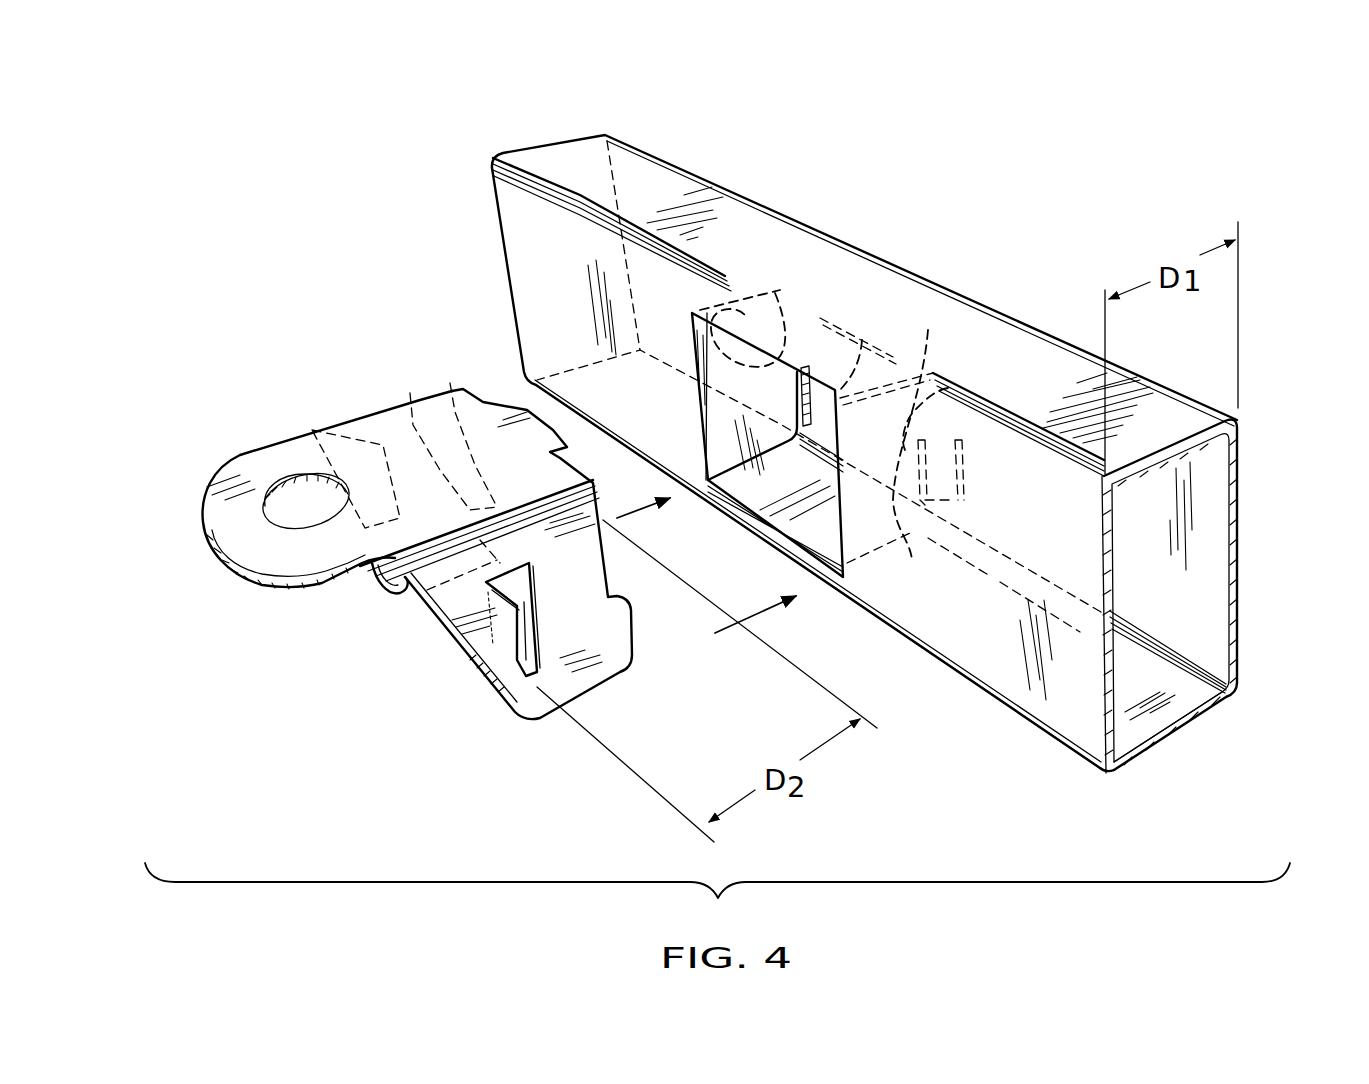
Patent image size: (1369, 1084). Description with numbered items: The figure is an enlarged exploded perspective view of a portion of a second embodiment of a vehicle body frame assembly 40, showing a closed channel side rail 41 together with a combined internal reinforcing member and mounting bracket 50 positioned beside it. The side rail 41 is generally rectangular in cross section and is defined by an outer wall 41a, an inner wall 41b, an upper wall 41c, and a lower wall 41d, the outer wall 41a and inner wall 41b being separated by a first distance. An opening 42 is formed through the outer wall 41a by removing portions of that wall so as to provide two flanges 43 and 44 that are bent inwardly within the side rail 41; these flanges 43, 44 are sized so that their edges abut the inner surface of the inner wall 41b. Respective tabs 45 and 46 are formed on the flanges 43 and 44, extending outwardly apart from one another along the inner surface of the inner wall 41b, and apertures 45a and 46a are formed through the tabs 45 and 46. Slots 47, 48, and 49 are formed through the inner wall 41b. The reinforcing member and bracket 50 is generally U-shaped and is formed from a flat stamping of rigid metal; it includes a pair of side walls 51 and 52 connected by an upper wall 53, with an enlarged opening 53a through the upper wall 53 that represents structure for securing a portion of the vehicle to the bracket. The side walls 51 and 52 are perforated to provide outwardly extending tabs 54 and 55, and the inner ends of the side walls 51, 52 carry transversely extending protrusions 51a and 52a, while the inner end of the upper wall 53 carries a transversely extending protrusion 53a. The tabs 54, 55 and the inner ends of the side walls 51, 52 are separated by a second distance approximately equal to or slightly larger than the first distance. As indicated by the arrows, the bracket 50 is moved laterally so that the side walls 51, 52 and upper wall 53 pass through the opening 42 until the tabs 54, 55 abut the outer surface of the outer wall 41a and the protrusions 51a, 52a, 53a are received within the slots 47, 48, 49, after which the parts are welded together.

The vehicle body frame assembly 40 is at (982, 146).
The side rail 41 is at (1240, 418).
The outer wall 41a is at (1075, 712).
The inner wall 41b is at (1237, 515).
The upper wall 41c is at (568, 160).
The lower wall 41d is at (1152, 722).
The opening 42 is at (766, 485).
The flange 43 is at (718, 412).
The flange 44 is at (928, 330).
The tab 45 is at (775, 293).
The aperture 45a is at (713, 353).
The tab 46 is at (948, 388).
The aperture 46a is at (957, 490).
The slot 47 is at (808, 368).
The slot 48 is at (862, 340).
The slot 49 is at (912, 540).
The combined internal reinforcing member and mounting bracket 50 is at (488, 716).
The side wall 51 is at (598, 688).
The protrusion 51a is at (625, 640).
The side wall 52 is at (410, 393).
The protrusion 52a is at (430, 410).
The upper wall 53 is at (285, 450).
The enlarged opening 53a is at (325, 523).
The tab 54 is at (303, 432).
The tab 55 is at (507, 627).